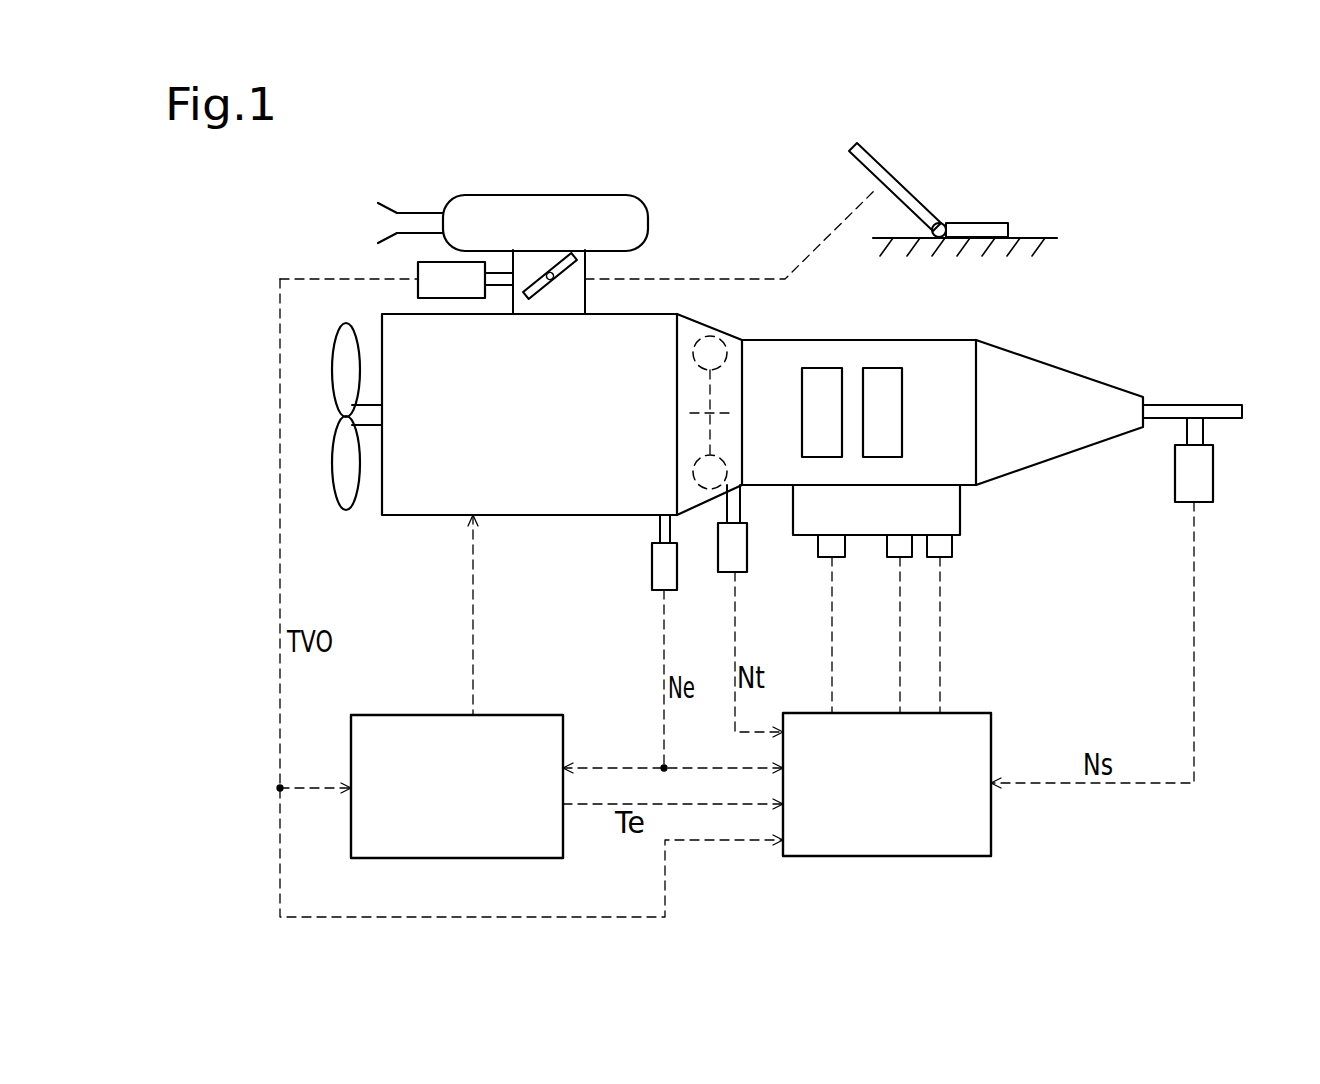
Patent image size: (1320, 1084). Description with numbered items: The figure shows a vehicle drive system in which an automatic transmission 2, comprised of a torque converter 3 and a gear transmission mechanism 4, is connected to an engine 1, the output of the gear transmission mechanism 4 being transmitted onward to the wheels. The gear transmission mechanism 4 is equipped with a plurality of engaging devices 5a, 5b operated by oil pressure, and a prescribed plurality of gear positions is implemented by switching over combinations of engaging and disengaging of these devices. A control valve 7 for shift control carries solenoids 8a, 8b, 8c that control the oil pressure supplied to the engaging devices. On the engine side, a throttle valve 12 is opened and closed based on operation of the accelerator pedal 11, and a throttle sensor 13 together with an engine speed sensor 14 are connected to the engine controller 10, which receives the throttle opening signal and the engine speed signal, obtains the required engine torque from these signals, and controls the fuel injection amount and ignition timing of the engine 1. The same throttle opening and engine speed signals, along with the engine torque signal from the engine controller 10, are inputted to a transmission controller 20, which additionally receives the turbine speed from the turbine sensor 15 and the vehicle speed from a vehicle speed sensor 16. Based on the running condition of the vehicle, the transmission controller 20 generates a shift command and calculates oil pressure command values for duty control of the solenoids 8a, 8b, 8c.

The engine 1 is at (412, 515).
The automatic transmission 2 is at (801, 332).
The torque converter 3 is at (710, 336).
The gear transmission mechanism 4 is at (930, 342).
The engaging device 5a is at (801, 440).
The engaging device 5b is at (903, 447).
The control valve 7 is at (950, 512).
The solenoid 8a is at (822, 558).
The solenoid 8b is at (891, 558).
The solenoid 8c is at (947, 558).
The engine controller 10 is at (518, 715).
The accelerator pedal 11 is at (905, 188).
The throttle valve 12 is at (538, 262).
The throttle sensor 13 is at (428, 273).
The engine speed sensor 14 is at (652, 568).
The turbine sensor 15 is at (720, 572).
The vehicle speed sensor 16 is at (1213, 475).
The transmission controller 20 is at (862, 856).